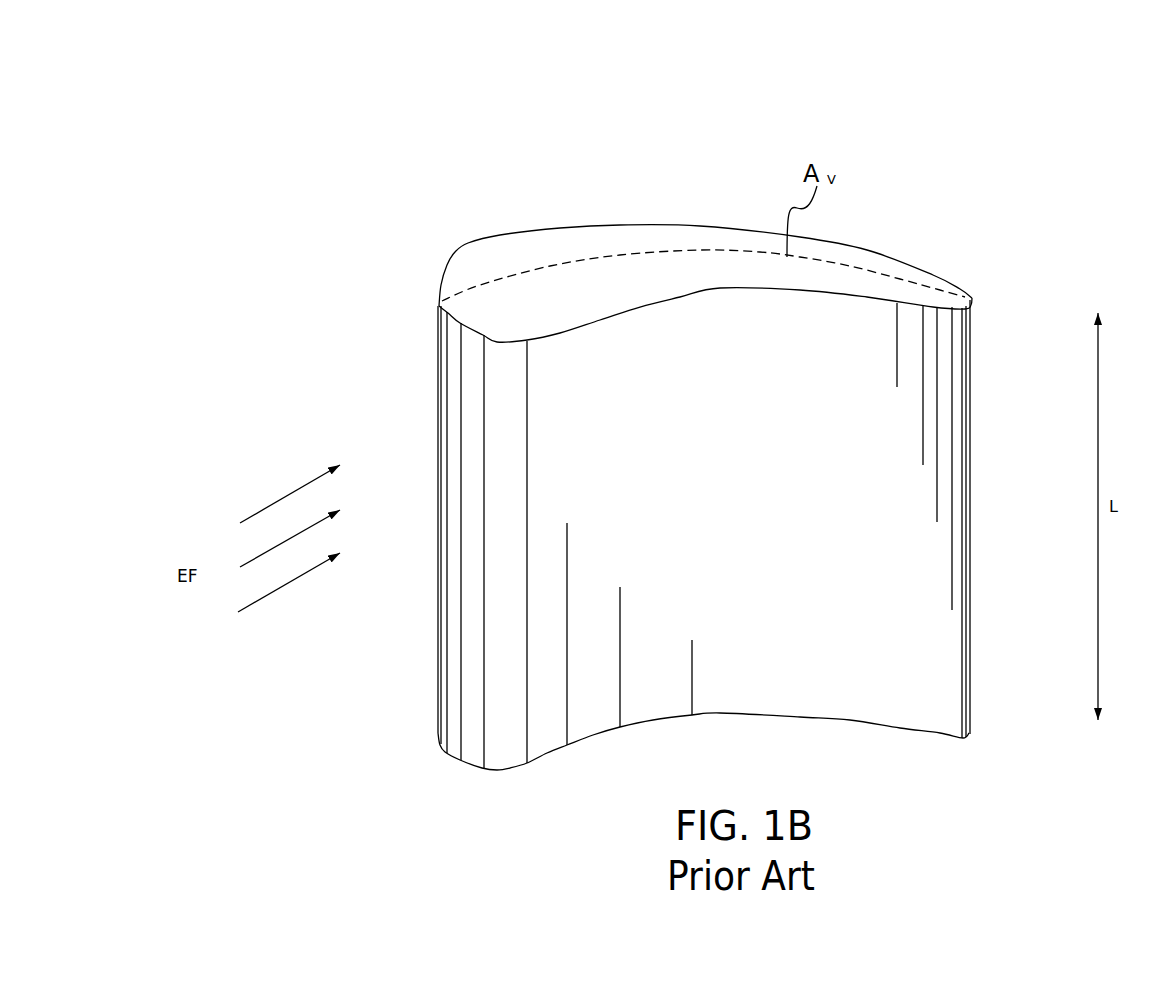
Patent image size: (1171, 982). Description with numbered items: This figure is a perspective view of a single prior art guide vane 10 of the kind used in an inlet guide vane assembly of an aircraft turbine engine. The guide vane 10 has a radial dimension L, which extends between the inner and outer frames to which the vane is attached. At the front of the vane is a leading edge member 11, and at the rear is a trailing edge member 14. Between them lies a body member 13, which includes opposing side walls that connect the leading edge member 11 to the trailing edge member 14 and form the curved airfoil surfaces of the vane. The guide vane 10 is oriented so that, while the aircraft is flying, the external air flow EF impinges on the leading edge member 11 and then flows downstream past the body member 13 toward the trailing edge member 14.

The guide vane 10 is at (766, 402).
The leading edge member 11 is at (445, 247).
The body member 13 is at (645, 185).
The trailing edge member 14 is at (1001, 292).